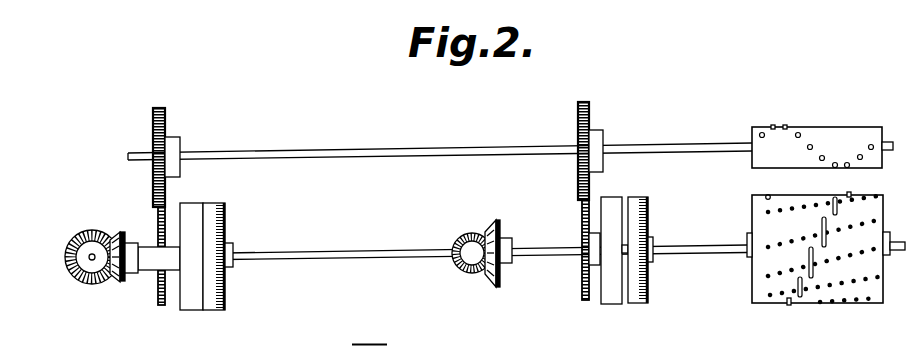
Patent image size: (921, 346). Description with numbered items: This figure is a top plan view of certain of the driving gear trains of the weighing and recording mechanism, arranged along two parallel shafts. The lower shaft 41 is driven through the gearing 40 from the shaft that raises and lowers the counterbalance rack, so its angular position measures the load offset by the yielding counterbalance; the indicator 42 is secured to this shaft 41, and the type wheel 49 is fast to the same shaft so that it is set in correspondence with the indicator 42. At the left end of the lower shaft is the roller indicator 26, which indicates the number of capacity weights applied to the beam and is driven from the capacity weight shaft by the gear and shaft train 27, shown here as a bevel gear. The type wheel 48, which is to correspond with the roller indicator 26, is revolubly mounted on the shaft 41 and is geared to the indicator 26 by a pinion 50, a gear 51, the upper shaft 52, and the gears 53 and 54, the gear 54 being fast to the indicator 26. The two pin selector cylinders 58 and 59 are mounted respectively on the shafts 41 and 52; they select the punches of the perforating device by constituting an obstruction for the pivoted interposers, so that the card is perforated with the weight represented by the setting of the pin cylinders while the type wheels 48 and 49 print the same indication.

The roller indicator 26 is at (191, 310).
The gear and shaft train 27 is at (117, 233).
The gearing 40 is at (485, 276).
The shaft 41 is at (400, 253).
The indicator 42 is at (218, 308).
The type wheel 48 is at (608, 305).
The type wheel 49 is at (648, 293).
The pinion 50 is at (582, 282).
The gear 51 is at (577, 112).
The shaft 52 is at (445, 149).
The gear 53 is at (167, 113).
The gear 54 is at (164, 305).
The pin selector cylinder 58 is at (758, 208).
The pin selector cylinder 59 is at (847, 132).